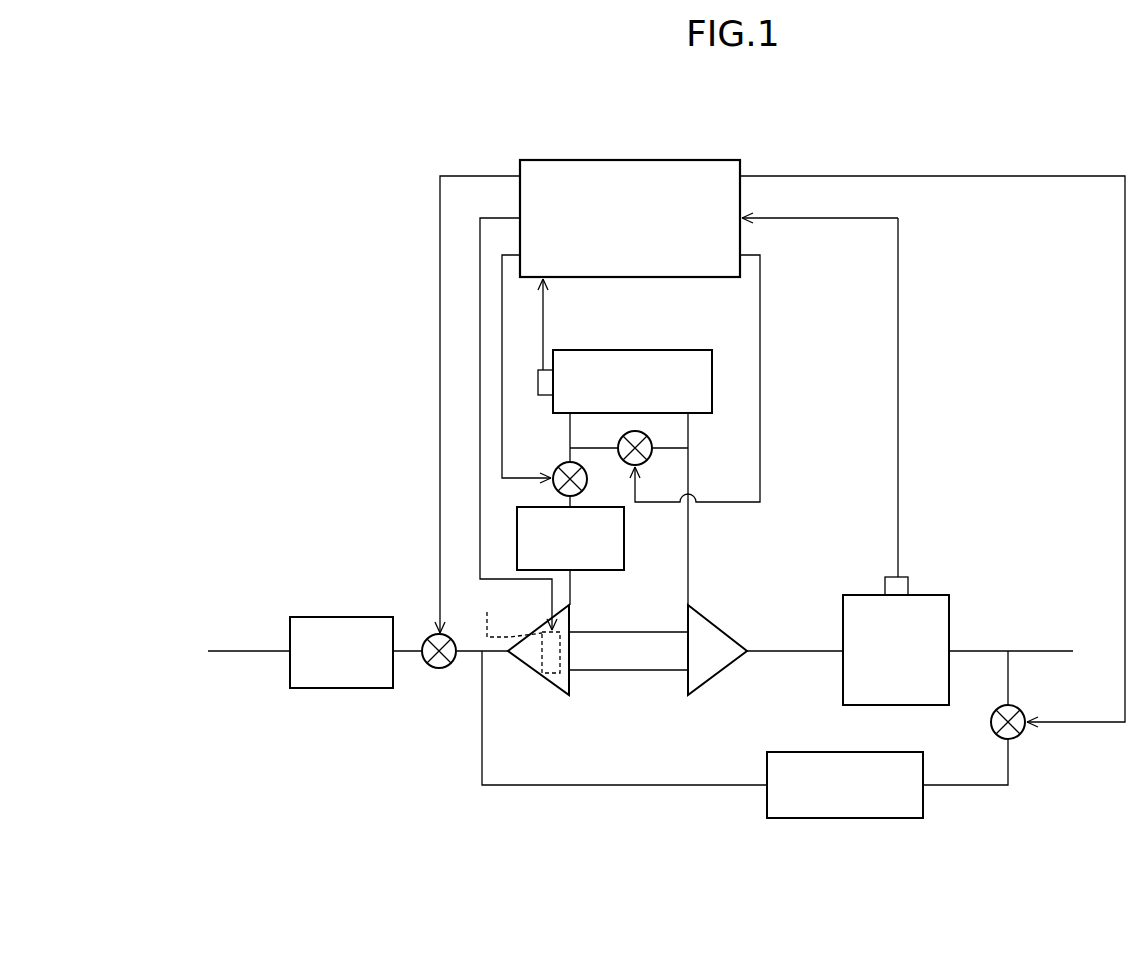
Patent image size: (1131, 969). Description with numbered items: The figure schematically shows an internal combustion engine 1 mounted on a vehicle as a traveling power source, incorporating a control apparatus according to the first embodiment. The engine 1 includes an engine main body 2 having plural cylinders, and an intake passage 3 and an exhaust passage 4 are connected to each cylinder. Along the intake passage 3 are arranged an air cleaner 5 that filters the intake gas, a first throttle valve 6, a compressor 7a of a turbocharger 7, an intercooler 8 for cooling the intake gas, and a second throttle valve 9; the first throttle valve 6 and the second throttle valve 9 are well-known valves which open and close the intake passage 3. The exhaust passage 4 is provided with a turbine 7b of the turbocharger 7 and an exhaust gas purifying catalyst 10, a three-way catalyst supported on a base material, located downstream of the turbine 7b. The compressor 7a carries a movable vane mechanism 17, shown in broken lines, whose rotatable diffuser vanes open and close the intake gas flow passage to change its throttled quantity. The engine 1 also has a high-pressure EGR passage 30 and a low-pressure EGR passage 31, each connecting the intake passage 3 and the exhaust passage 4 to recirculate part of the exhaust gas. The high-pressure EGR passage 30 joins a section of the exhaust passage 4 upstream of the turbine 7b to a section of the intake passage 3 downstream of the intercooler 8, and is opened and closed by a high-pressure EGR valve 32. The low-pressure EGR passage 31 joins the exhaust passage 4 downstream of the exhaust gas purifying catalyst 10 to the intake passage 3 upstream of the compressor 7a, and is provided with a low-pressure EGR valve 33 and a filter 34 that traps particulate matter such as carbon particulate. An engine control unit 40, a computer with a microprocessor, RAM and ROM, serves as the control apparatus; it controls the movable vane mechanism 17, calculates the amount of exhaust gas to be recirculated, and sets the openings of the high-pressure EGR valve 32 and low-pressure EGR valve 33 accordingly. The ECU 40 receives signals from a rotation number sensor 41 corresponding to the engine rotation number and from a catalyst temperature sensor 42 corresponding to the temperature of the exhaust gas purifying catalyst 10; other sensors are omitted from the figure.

The internal combustion engine 1 is at (254, 315).
The engine main body 2 is at (657, 350).
The intake passage 3 is at (408, 655).
The exhaust passage 4 is at (793, 650).
The air cleaner 5 is at (310, 690).
The first throttle valve 6 is at (440, 668).
The turbocharger 7 is at (610, 687).
The compressor 7a is at (540, 697).
The turbine 7b is at (712, 697).
The intercooler 8 is at (624, 548).
The second throttle valve 9 is at (560, 466).
The exhaust gas purifying catalyst 10 is at (949, 620).
The movable vane mechanism 17 is at (516, 631).
The high-pressure EGR passage 30 is at (598, 452).
The low-pressure EGR passage 31 is at (630, 787).
The high-pressure EGR valve 32 is at (622, 437).
The low-pressure EGR valve 33 is at (1020, 735).
The filter 34 is at (842, 818).
The engine control unit 40 is at (600, 278).
The rotation number sensor 41 is at (538, 385).
The catalyst temperature sensor 42 is at (908, 586).